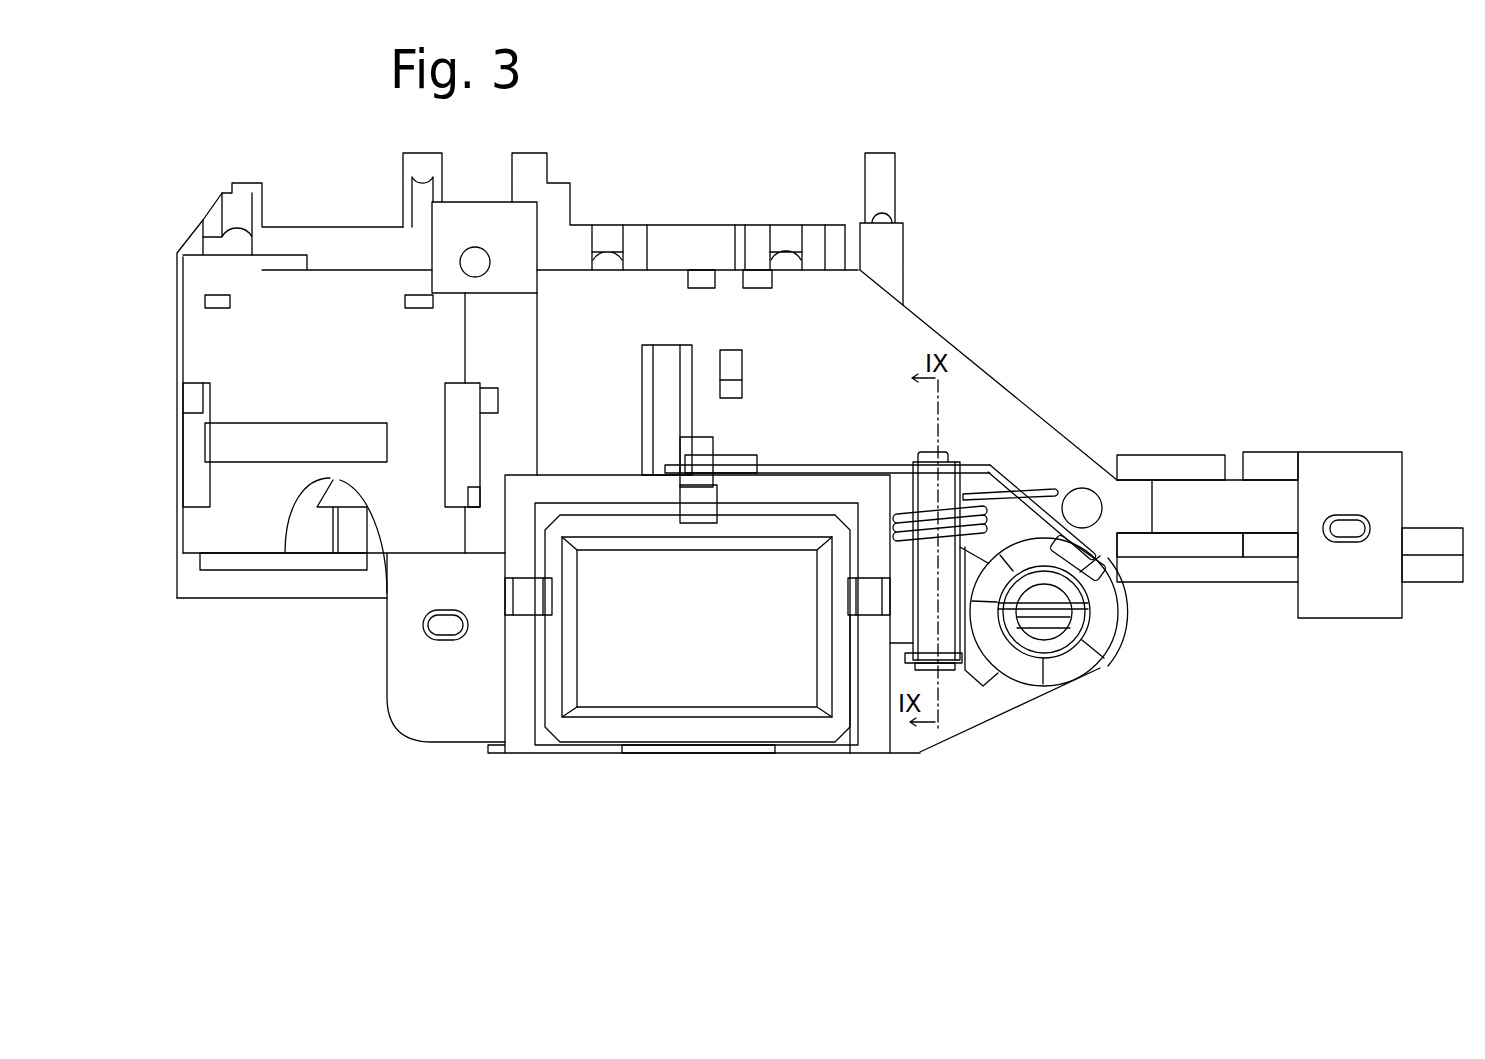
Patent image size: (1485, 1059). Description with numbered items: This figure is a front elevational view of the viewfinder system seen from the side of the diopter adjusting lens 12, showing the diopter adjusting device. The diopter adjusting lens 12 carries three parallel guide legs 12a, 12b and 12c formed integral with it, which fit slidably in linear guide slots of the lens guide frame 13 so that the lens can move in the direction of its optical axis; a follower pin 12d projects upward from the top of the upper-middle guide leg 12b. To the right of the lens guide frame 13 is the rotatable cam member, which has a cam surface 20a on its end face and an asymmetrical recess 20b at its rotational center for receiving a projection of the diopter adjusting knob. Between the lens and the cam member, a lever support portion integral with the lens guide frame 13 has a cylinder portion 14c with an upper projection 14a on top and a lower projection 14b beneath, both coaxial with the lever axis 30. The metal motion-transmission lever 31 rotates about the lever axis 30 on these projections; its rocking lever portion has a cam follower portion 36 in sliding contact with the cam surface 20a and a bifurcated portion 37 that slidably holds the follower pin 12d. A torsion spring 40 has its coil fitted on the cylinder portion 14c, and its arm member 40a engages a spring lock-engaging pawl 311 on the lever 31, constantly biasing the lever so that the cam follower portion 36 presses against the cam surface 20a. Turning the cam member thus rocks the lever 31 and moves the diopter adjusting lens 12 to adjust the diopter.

The spring lock-engaging pawl 311 is at (1080, 448).
The motion-transmission lever 31 is at (868, 456).
The lever axis 30 is at (1029, 535).
The torsion spring 40 is at (952, 492).
The arm member 40a is at (1058, 493).
The cam follower portion 36 is at (1084, 488).
The upper projection 14a is at (922, 503).
The lower projection 14b is at (940, 677).
The cylinder portion 14c is at (962, 485).
The bifurcated portion 37 is at (670, 465).
The follower pin 12d is at (705, 447).
The guide leg 12a is at (527, 602).
The guide leg 12b is at (695, 507).
The diopter adjusting lens 12 is at (750, 685).
The lens guide frame 13 is at (877, 742).
The guide leg 12c is at (868, 613).
The asymmetrical recess 20b is at (1020, 648).
The cam surface 20a is at (1073, 663).